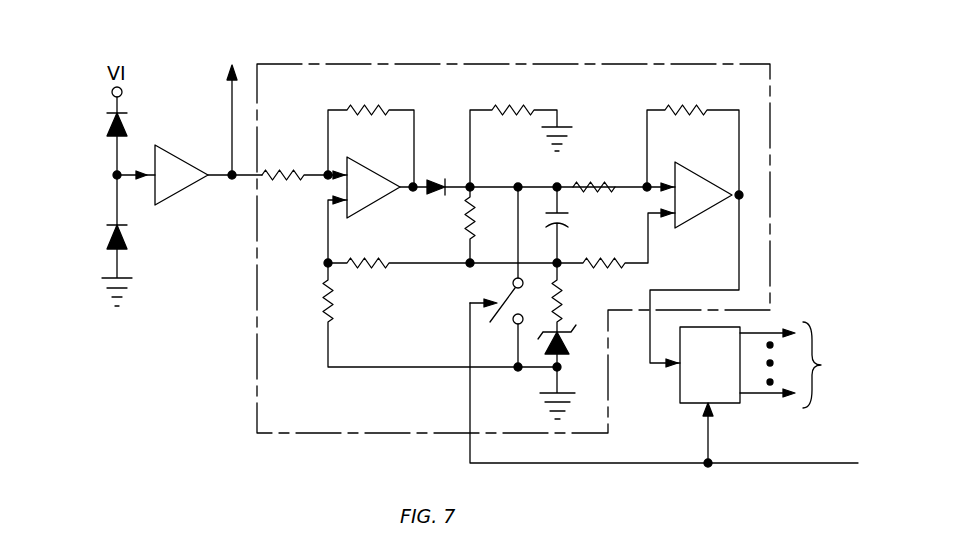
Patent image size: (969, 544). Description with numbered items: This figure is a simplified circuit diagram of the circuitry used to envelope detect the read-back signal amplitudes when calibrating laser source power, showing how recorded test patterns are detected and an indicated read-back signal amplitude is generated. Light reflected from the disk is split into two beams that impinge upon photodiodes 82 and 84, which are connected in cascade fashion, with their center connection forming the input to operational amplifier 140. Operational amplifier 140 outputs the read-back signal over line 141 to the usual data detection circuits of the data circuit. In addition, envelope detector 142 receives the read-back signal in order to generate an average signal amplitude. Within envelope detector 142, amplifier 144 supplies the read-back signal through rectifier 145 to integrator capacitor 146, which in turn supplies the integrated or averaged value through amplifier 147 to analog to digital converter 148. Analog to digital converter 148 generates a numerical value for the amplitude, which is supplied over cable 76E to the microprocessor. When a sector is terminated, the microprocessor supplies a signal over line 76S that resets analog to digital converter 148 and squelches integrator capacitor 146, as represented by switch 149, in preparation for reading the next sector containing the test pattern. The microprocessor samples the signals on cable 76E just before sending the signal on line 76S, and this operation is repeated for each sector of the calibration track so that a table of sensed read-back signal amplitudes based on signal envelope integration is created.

The photodiode 84 is at (107, 113).
The photodiode 82 is at (108, 224).
The operational amplifier 140 is at (182, 191).
The line 141 is at (231, 98).
The envelope detector 142 is at (680, 64).
The amplifier 144 is at (372, 204).
The rectifier 145 is at (447, 178).
The integrator capacitor 146 is at (568, 207).
The amplifier 147 is at (712, 183).
The analog to digital converter 148 is at (680, 388).
The switch 149 is at (513, 288).
The cable 76E is at (799, 365).
The line 76S is at (833, 463).